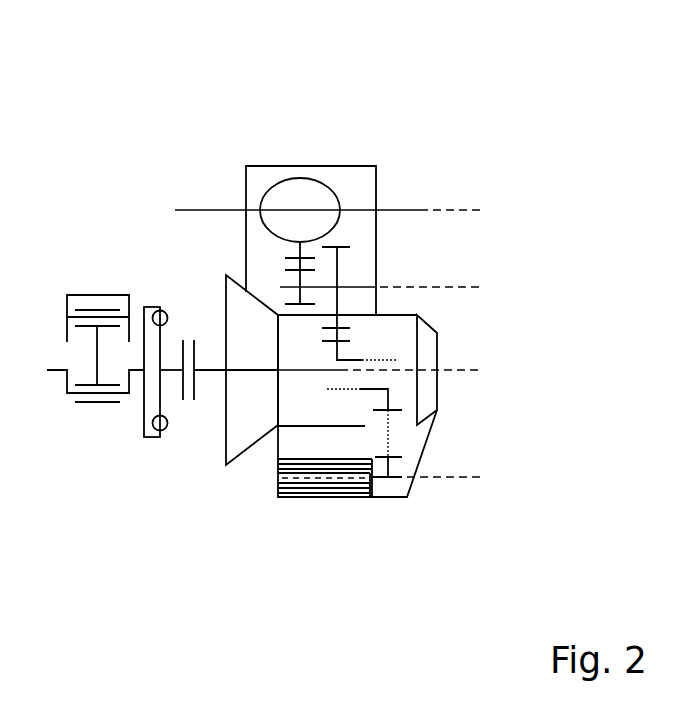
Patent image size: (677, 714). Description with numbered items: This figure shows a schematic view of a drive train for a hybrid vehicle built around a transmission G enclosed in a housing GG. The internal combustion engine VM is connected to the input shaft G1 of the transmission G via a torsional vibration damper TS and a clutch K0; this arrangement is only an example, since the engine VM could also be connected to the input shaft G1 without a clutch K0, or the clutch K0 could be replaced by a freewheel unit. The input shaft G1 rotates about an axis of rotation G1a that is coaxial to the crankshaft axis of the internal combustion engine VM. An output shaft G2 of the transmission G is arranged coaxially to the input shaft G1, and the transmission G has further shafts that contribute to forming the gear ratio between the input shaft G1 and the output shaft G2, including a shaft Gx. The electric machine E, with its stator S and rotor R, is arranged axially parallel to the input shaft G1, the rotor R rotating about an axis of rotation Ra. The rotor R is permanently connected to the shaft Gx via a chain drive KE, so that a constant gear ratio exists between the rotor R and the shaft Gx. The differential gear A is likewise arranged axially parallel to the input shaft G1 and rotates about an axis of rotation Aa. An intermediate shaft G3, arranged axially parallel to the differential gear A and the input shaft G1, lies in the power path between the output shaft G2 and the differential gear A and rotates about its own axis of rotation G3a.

The transmission G is at (396, 333).
The housing GG is at (263, 166).
The differential gear A is at (334, 192).
The axis of rotation Aa is at (353, 211).
The intermediate shaft G3 is at (350, 287).
The axis of rotation G3a is at (416, 290).
The output shaft G2 is at (352, 358).
The axis of rotation G1a is at (415, 368).
The further shaft Gx is at (390, 400).
The chain drive KE is at (388, 433).
The axis of rotation Ra is at (406, 480).
The stator S is at (347, 497).
The rotor R is at (362, 478).
The electric machine E is at (333, 552).
The input shaft G1 is at (208, 373).
The clutch K0 is at (187, 413).
The torsional vibration damper TS is at (148, 450).
The internal combustion engine VM is at (85, 423).